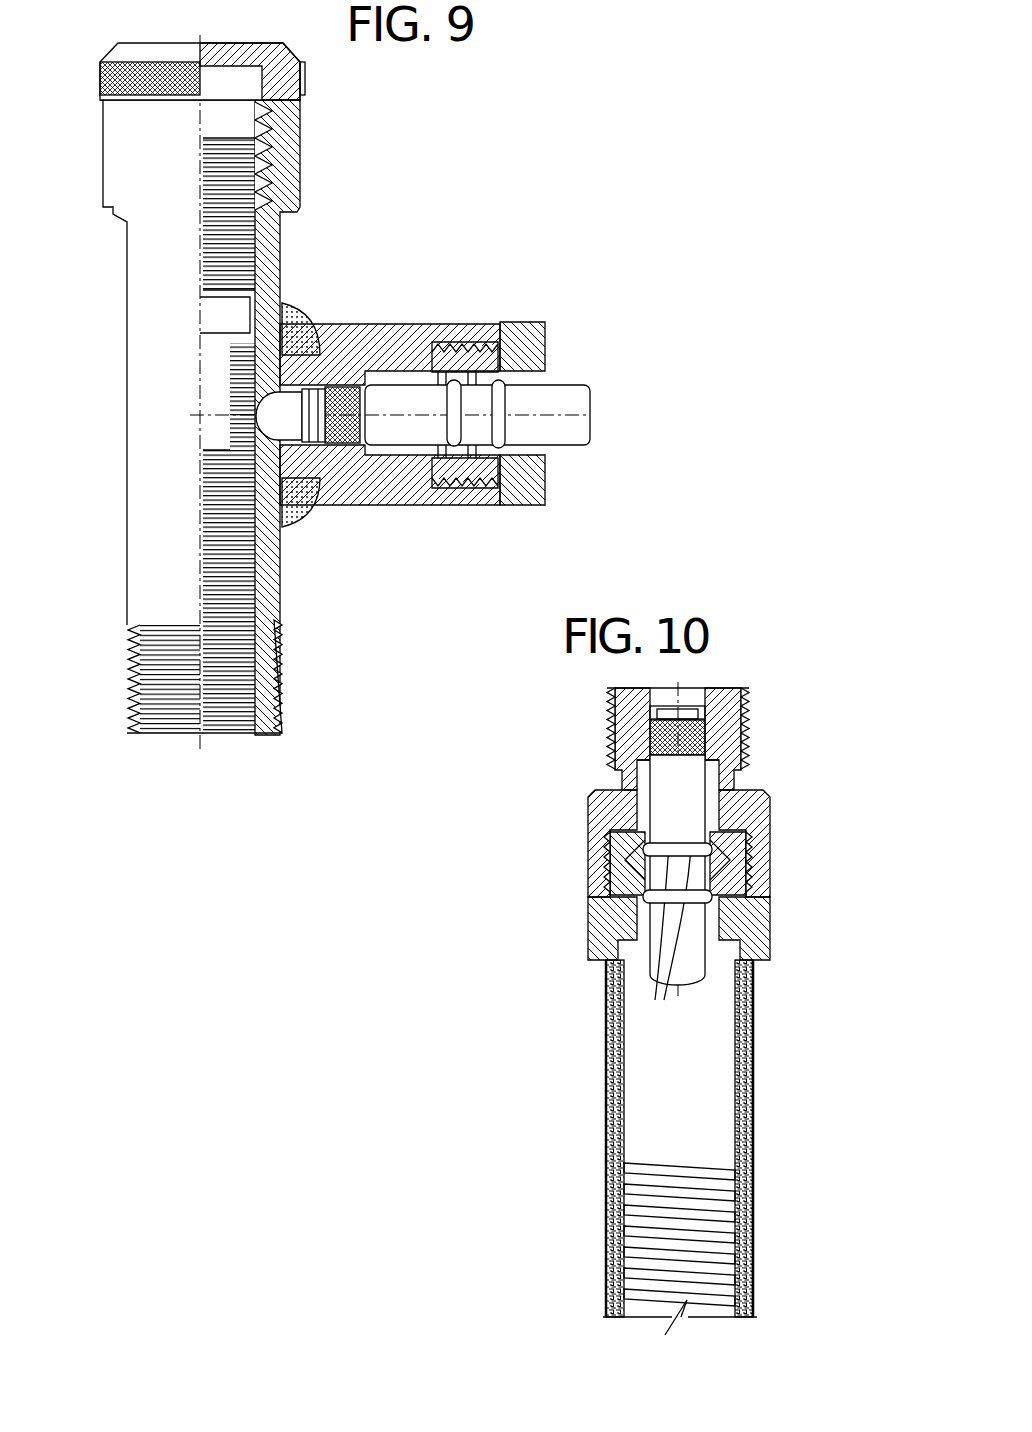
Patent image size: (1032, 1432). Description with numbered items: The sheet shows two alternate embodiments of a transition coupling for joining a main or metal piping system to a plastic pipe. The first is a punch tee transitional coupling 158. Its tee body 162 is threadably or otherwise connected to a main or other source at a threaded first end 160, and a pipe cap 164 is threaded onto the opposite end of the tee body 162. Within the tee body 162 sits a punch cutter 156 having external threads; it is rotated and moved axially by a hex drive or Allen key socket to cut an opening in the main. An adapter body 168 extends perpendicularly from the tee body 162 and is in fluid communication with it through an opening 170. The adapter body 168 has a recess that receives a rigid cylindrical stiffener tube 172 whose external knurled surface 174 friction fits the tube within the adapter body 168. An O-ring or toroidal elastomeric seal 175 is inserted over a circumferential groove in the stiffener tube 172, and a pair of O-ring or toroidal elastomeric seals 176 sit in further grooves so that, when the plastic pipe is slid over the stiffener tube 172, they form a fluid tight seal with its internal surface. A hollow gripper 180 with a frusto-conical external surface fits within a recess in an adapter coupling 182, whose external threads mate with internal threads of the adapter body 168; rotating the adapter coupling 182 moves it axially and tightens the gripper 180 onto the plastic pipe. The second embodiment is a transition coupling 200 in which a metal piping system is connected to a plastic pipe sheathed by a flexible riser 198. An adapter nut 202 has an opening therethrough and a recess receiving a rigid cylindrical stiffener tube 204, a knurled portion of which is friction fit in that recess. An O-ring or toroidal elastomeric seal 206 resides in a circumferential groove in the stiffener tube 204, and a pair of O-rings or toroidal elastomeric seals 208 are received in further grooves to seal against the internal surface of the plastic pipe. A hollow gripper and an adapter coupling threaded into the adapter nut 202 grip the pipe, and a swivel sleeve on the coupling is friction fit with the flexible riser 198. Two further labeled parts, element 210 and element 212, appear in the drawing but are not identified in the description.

In FIG. 9, the punch cutter 156 is at (300, 250).
In FIG. 9, the transitional coupling 158 is at (444, 365).
In FIG. 9, the threaded first end 160 is at (259, 392).
In FIG. 9, the tee body 162 is at (280, 597).
In FIG. 9, the pipe cap 164 is at (302, 140).
In FIG. 9, the adapter body 168 is at (398, 333).
In FIG. 9, the opening 170 is at (295, 425).
In FIG. 9, the rigid cylindrical stiffener tube 172 is at (586, 425).
In FIG. 9, the external knurled surface 174 is at (348, 447).
In FIG. 9, the O-ring or toroidal elastomeric seal 175 is at (320, 382).
In FIG. 9, the pair of O-ring or toroidal elastomeric seals 176 is at (500, 422).
In FIG. 9, the hollow gripper 180 is at (448, 473).
In FIG. 9, the adapter coupling 182 is at (548, 485).
In FIG. 10, the flexible riser 198 is at (757, 1185).
In FIG. 10, the transition coupling 200 is at (694, 997).
In FIG. 10, the adapter nut 202 is at (767, 822).
In FIG. 10, the rigid cylindrical stiffener tube 204 is at (686, 786).
In FIG. 10, the O-ring or toroidal elastomeric seal 206 is at (743, 718).
In FIG. 10, the pair of O-rings or toroidal elastomeric seals 208 is at (655, 1000).
In FIG. 10, the seal insert 210 is at (607, 862).
In FIG. 10, the flange 212 is at (768, 935).